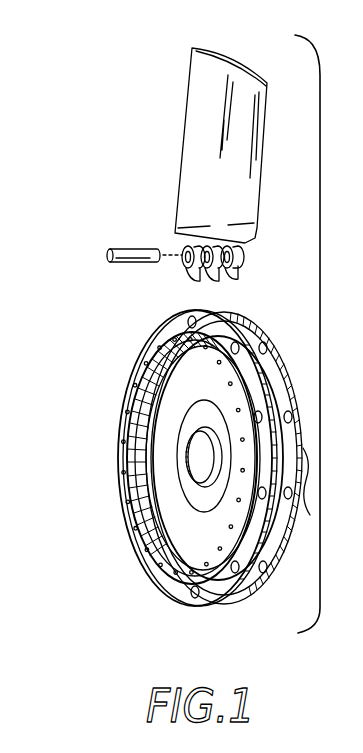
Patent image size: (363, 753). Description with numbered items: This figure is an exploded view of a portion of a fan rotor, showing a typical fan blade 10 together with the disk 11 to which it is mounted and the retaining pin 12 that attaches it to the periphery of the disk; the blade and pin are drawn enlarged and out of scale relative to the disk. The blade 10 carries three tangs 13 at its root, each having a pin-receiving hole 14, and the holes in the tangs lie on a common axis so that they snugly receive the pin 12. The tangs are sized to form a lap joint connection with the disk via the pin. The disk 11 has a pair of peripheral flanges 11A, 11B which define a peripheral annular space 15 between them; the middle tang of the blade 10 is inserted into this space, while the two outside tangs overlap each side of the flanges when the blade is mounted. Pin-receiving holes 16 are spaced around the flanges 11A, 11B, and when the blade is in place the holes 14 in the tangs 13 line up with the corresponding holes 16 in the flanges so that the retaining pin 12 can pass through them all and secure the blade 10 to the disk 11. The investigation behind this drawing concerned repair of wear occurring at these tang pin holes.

The blade 10 is at (182, 139).
The disk 11 is at (172, 323).
The peripheral flange 11A is at (252, 592).
The peripheral flange 11B is at (282, 535).
The retaining pin 12 is at (118, 244).
The tangs 13 is at (228, 274).
The pin-receiving holes 14 is at (236, 250).
The peripheral annular space 15 is at (263, 368).
The pin-receiving holes 16 is at (272, 410).